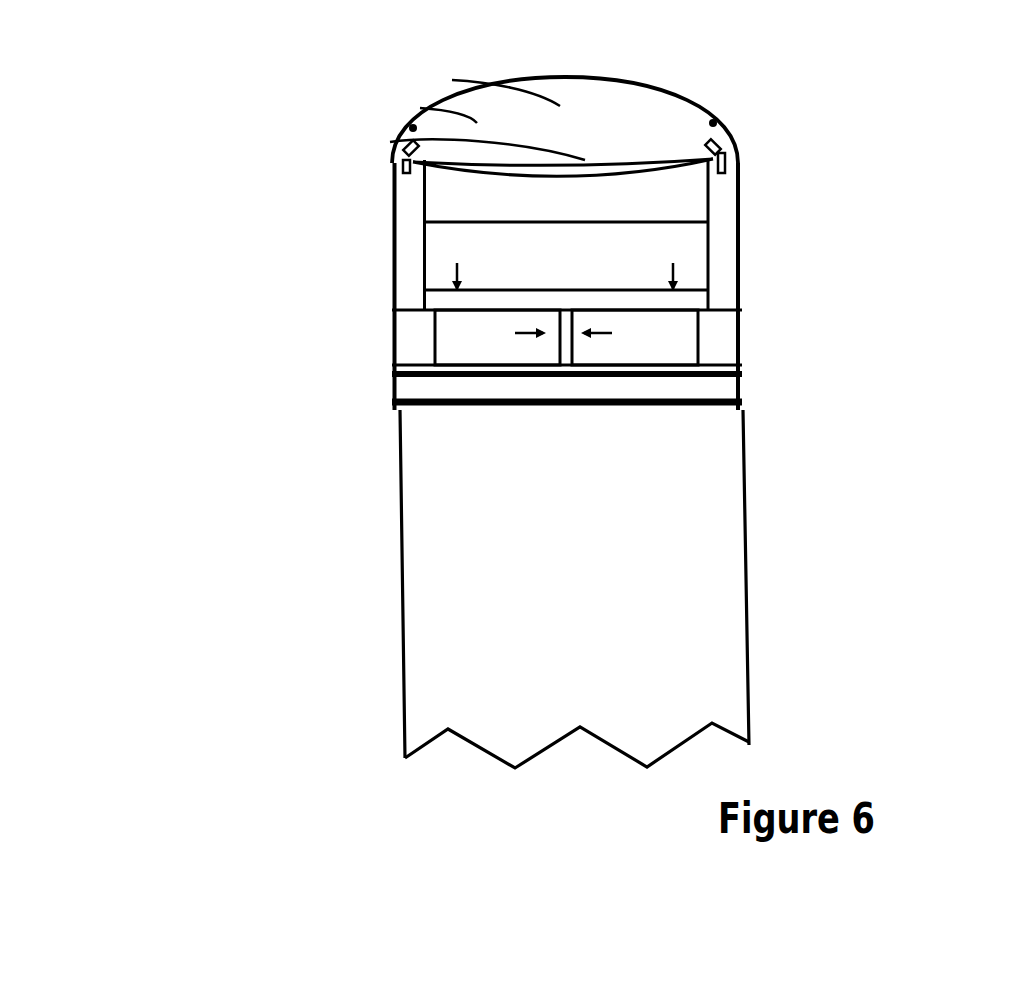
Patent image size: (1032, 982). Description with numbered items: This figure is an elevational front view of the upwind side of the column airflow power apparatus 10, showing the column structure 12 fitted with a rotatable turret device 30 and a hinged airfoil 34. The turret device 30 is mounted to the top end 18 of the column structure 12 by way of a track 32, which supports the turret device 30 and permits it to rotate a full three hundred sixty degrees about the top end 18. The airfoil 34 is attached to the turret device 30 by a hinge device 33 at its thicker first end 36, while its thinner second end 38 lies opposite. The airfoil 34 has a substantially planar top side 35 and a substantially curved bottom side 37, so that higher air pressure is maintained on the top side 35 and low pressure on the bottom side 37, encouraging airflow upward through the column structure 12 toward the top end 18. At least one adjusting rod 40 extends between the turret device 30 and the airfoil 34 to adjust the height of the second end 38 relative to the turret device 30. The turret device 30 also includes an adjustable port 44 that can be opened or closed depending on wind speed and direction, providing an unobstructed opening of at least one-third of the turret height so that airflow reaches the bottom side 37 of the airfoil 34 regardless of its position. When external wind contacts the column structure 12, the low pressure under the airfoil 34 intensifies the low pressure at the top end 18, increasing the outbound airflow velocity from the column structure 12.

The column airflow power apparatus 10 is at (152, 507).
The column structure 12 is at (748, 572).
The top end 18 is at (587, 443).
The turret device 30 is at (415, 287).
The track 32 is at (392, 373).
The hinge device 33 is at (600, 117).
The airfoil 34 is at (420, 108).
The top side 35 is at (585, 79).
The first end 36 is at (600, 117).
The bottom side 37 is at (430, 163).
The second end 38 is at (495, 50).
The adjusting rod 40 is at (413, 128).
The adjustable port 44 is at (532, 320).